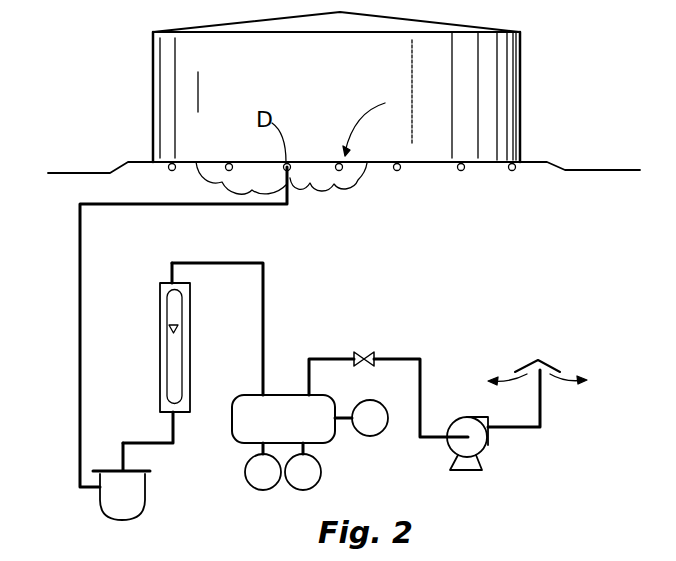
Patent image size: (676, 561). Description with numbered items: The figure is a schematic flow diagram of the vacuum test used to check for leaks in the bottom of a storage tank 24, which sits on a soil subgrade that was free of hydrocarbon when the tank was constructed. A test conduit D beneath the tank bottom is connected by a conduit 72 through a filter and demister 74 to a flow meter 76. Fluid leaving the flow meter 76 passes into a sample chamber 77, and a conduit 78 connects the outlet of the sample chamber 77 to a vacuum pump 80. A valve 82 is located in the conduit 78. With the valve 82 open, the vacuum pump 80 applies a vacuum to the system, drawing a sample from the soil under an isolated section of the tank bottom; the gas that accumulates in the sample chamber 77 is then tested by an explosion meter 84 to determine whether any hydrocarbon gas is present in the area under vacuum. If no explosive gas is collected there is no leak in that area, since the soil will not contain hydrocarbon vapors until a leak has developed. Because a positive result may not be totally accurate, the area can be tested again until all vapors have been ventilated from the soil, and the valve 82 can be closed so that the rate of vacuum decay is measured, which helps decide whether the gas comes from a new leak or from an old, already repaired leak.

The tank car 24 is at (523, 62).
The conduit 72 is at (78, 241).
The filter and demister 74 is at (138, 513).
The flow meter 76 is at (160, 322).
The sample chamber 77 is at (288, 394).
The conduit 78 is at (403, 356).
The vacuum pump 80 is at (480, 450).
The valve 82 is at (356, 350).
The explosion meter 84 is at (362, 437).